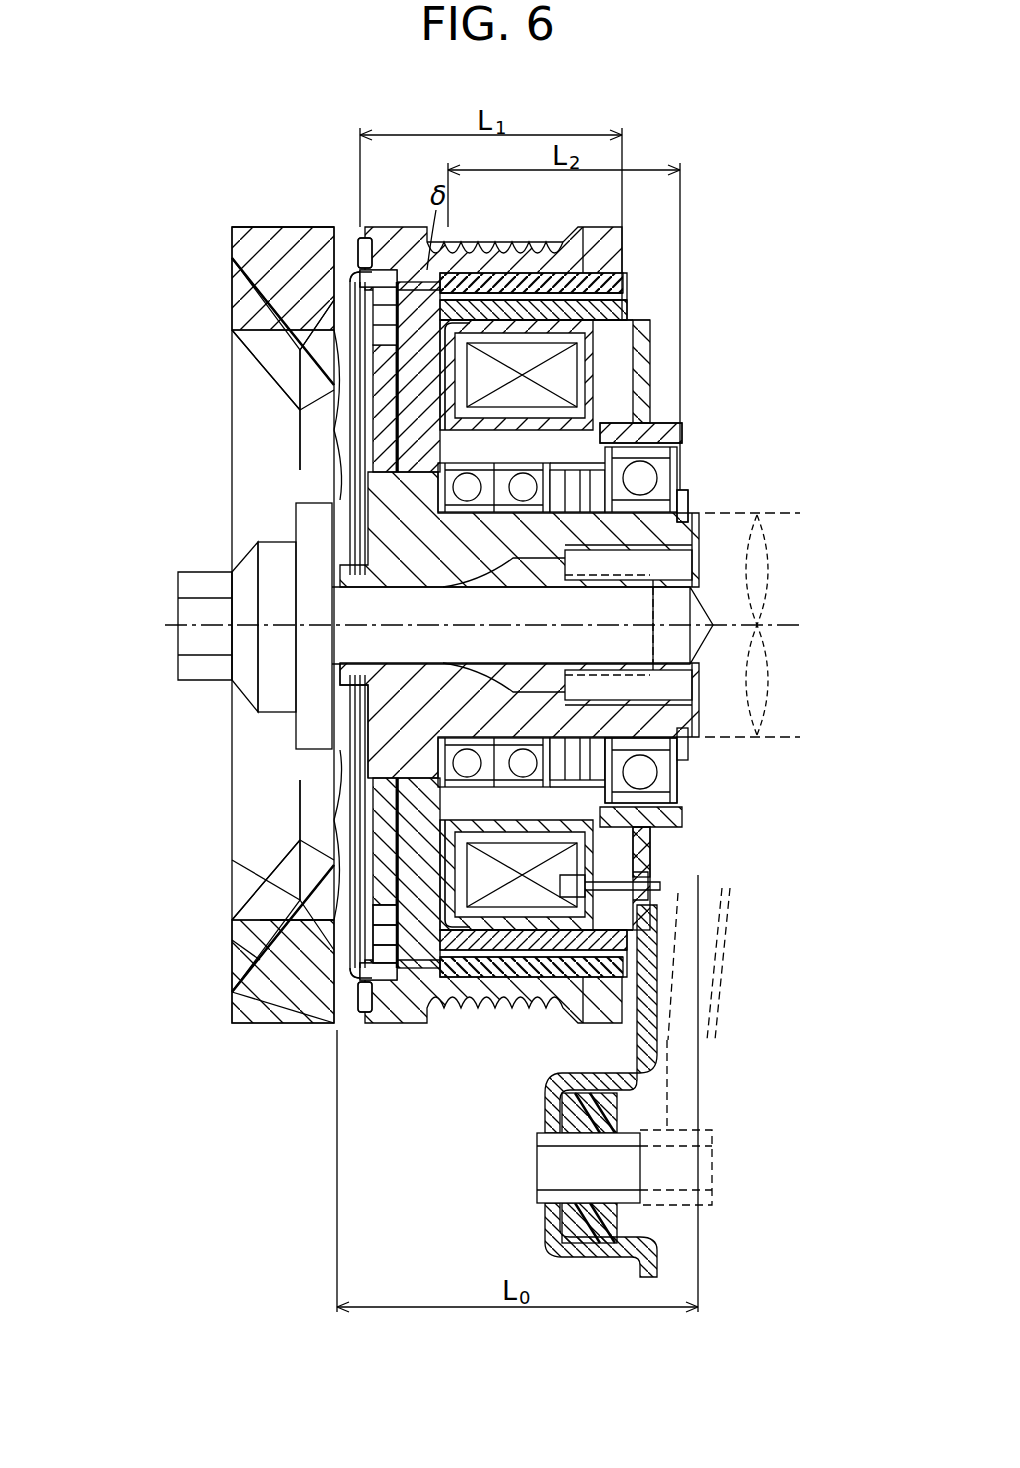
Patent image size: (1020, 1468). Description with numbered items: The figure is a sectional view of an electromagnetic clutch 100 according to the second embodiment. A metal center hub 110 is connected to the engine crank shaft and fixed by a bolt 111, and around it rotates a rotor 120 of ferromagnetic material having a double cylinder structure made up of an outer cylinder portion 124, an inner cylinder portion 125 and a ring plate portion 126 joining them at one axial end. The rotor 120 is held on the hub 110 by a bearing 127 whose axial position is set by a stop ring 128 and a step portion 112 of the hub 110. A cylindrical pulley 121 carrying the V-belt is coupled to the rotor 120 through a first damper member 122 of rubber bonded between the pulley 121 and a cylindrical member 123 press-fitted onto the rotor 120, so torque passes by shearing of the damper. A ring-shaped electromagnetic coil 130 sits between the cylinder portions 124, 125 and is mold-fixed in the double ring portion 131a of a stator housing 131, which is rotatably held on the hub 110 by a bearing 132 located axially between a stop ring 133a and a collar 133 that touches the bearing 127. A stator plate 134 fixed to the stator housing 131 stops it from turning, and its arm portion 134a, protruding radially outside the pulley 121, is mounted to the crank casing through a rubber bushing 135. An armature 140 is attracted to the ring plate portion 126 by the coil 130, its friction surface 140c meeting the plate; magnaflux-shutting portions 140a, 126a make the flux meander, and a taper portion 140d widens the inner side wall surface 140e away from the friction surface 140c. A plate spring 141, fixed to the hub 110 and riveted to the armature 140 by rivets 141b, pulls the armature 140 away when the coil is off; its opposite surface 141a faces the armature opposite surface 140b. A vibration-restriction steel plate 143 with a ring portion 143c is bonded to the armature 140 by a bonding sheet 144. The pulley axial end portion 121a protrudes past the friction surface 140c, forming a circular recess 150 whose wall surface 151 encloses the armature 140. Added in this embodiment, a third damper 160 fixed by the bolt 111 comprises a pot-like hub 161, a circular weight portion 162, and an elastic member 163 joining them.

The electromagnetic clutch 100 is at (255, 215).
The center hub 110 is at (410, 530).
The bolt 111 is at (202, 670).
The step portion 112 is at (420, 748).
The rotor 120 is at (634, 304).
The pulley 121 is at (622, 240).
The axial end portion 121a is at (365, 248).
The first damper member 122 is at (625, 264).
The cylindrical member 123 is at (628, 286).
The outer cylinder portion 124 is at (545, 245).
The inner cylinder portion 125 is at (645, 440).
The ring plate portion 126 is at (350, 395).
The magnaflux-shutting portion 126a is at (395, 425).
The bearing 127 is at (400, 810).
The stop ring 128 is at (648, 825).
The electromagnetic coil 130 is at (600, 383).
The stator housing 131 is at (617, 400).
The double ring portion 131a is at (640, 332).
The bearing 132 is at (665, 800).
The collar 133 is at (640, 478).
The stop ring 133a is at (684, 500).
The stator plate 134 is at (645, 355).
The arm portion 134a is at (655, 1005).
The bushing 135 is at (568, 1110).
The armature 140 is at (340, 353).
The magnaflux-shutting portion 140a is at (345, 372).
The opposite surface 140b is at (410, 440).
The friction surface 140c is at (420, 455).
The taper portion 140d is at (390, 790).
The inner side wall surface 140e is at (400, 770).
The plate spring 141 is at (320, 903).
The opposite surface 141a is at (247, 917).
The rivet 141b is at (237, 317).
The vibration-restriction steel plate 143 is at (247, 960).
The ring portion 143c is at (300, 300).
The bonding sheet 144 is at (247, 973).
The circular recess 150 is at (386, 268).
The wall surface 151 is at (335, 258).
The third damper 160 is at (232, 335).
The hub 161 is at (300, 875).
The weight portion 162 is at (230, 1010).
The elastic member 163 is at (233, 953).